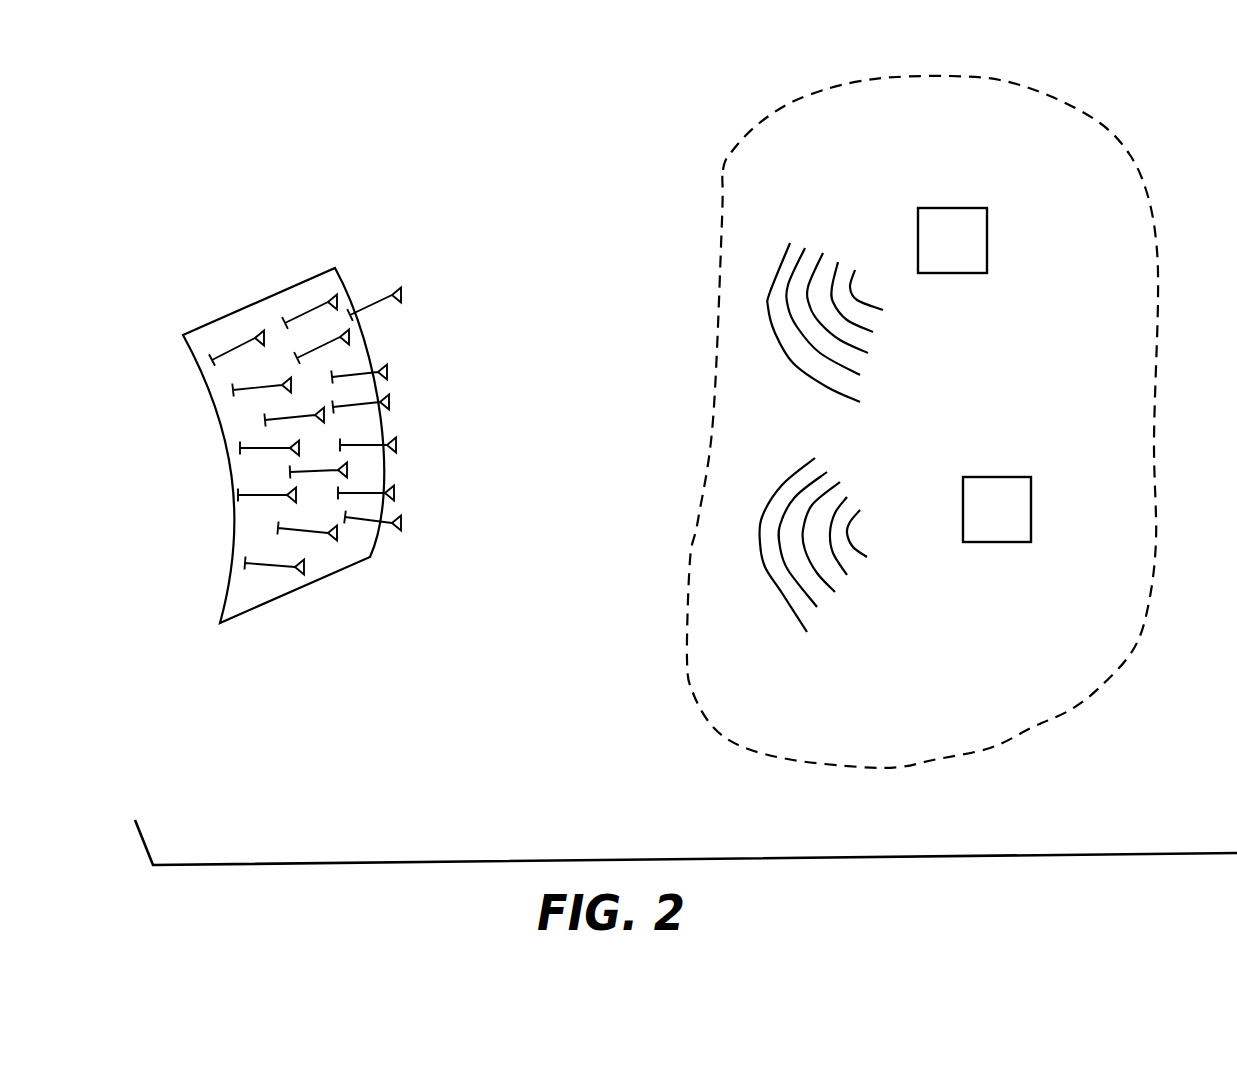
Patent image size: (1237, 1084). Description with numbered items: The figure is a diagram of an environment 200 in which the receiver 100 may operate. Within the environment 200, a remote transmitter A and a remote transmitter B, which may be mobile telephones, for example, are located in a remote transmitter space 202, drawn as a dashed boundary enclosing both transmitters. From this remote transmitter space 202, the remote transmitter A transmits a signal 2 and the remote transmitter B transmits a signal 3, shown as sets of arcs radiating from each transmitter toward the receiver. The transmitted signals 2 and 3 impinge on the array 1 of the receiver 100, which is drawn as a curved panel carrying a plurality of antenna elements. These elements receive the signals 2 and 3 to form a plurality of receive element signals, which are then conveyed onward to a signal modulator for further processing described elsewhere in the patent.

The array 1 is at (372, 350).
The receiver 100 is at (367, 588).
The signal 2 is at (873, 357).
The signal 3 is at (848, 483).
The remote transmitter A is at (987, 218).
The remote transmitter B is at (1031, 490).
The environment 200 is at (528, 815).
The remote transmitter space 202 is at (748, 748).